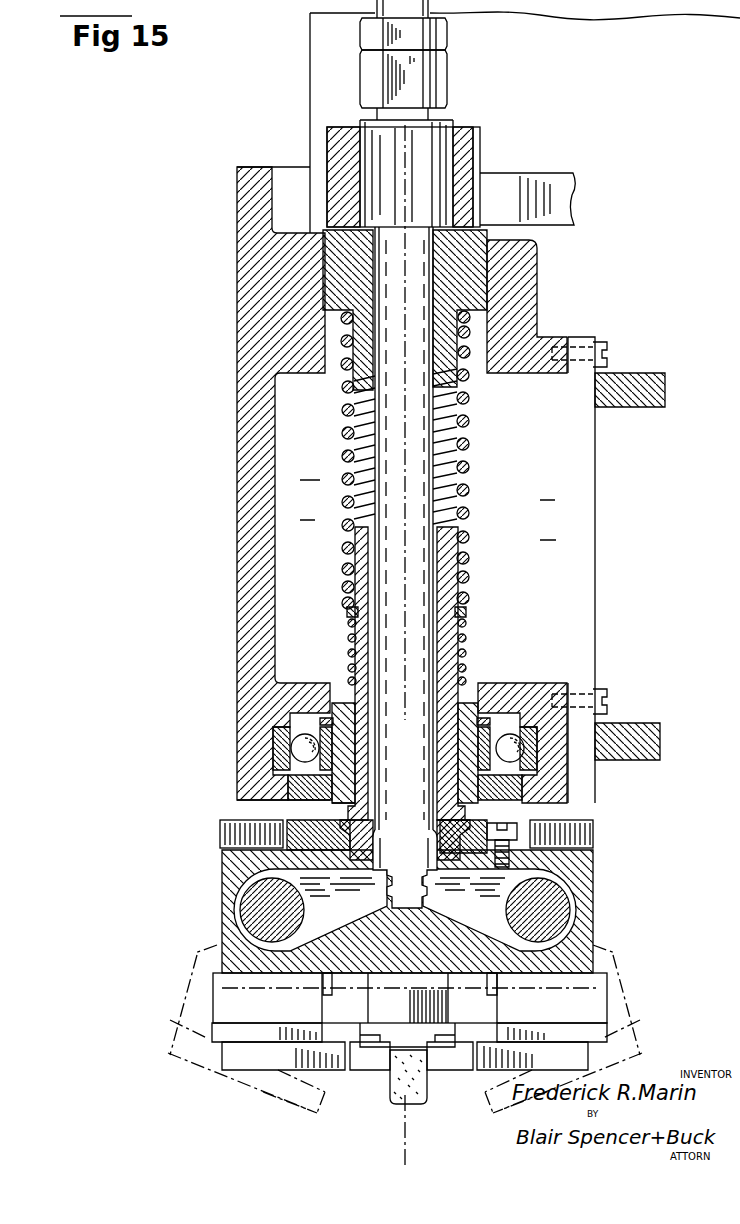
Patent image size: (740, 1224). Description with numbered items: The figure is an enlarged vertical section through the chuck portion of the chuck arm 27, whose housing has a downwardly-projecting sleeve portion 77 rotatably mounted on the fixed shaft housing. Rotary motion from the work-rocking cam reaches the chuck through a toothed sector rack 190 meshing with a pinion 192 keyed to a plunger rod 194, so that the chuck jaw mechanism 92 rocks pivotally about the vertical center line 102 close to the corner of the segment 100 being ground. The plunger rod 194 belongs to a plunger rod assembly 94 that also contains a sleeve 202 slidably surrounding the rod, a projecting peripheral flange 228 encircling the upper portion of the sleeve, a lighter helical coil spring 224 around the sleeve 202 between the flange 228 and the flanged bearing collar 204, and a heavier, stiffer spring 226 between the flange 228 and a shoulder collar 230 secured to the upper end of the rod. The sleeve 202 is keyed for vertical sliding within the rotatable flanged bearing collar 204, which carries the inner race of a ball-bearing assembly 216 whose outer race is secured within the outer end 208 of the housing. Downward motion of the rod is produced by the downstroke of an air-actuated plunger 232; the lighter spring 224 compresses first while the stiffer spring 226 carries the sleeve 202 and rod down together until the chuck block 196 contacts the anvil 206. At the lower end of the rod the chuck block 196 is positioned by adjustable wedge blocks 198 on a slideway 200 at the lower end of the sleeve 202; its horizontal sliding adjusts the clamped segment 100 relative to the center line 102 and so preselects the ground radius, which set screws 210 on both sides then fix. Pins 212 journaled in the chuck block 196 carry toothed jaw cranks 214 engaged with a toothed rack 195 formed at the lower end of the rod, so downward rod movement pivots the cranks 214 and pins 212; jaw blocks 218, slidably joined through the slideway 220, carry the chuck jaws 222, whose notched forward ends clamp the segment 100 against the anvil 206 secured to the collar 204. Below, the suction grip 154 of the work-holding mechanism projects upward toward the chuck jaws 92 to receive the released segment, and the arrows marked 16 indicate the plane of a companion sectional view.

The chuck arm 27 is at (213, 383).
The outer end of the chuck arm housing 208 is at (275, 695).
The plunger 232 is at (441, 71).
The pinion 192 is at (478, 136).
The toothed sector rack 190 is at (555, 181).
The shoulder collar 230 is at (470, 264).
The sleeve portion 77 is at (637, 384).
The plunger rod assembly 94 is at (502, 455).
The plunger rod 194 is at (390, 439).
The vertical center line 102 is at (404, 672).
The second helical coil spring 226 is at (477, 513).
The sleeve 202 is at (447, 572).
The projecting peripheral flange 228 is at (349, 612).
The helical coil spring 224 is at (467, 643).
The flanged bearing collar 204 is at (349, 757).
The ball-bearing assembly 216 is at (298, 748).
The section line 16 is at (405, 806).
The chuck jaw mechanism 92 is at (354, 970).
The set screws 210 is at (220, 835).
The chuck block 196 is at (235, 860).
The slideway 200 is at (368, 851).
The toothed rack 195 is at (405, 883).
The adjustable wedge blocks 198 is at (511, 835).
The pins 212 is at (260, 903).
The toothed jaw cranks 214 is at (343, 911).
The slideway 220 is at (325, 984).
The segment 100 is at (372, 1031).
The anvil 206 is at (432, 1008).
The chuck jaws 222 is at (270, 1053).
The suction grip 154 is at (424, 1084).
The jaw blocks 218 is at (223, 998).